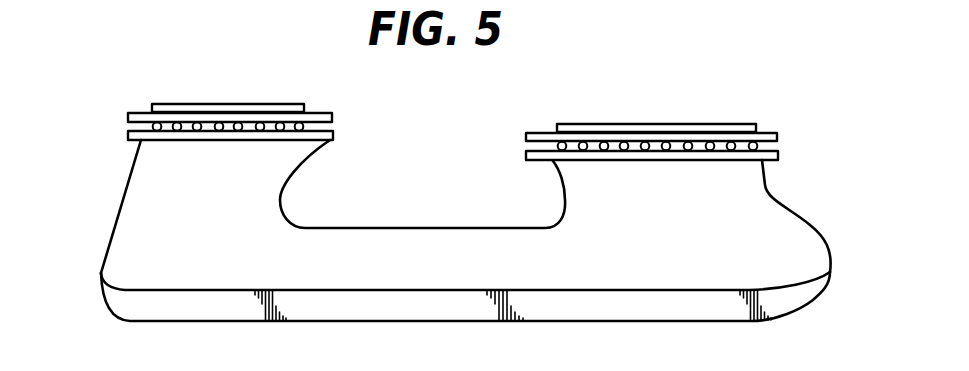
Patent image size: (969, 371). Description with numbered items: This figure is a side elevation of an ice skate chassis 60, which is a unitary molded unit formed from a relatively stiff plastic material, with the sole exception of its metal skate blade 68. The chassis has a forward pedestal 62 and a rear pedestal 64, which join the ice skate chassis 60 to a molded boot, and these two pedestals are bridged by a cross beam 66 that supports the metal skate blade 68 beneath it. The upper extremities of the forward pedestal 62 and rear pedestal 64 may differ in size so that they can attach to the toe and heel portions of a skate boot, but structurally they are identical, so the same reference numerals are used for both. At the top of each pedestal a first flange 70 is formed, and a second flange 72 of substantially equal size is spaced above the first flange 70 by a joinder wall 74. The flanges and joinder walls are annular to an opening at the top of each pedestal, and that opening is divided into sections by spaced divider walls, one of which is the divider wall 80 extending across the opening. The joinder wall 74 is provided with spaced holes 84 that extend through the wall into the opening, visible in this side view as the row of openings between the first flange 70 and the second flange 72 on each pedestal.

The ice skate chassis 60 is at (784, 332).
The forward pedestal 62 is at (757, 198).
The rear pedestal 64 is at (153, 188).
The cross beam 66 is at (437, 250).
The metal skate blade 68 is at (693, 307).
The first flange 70 is at (334, 136).
The second flange 72 is at (333, 117).
The joinder wall 74 is at (454, 164).
The divider wall 80 is at (213, 103).
The spaced holes 84 is at (238, 133).